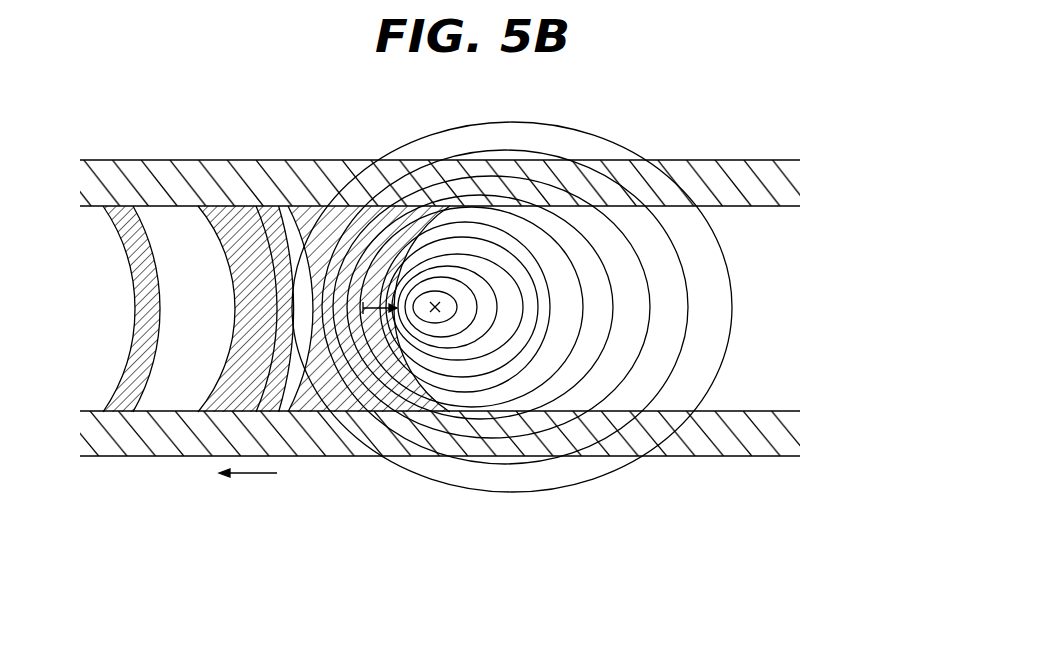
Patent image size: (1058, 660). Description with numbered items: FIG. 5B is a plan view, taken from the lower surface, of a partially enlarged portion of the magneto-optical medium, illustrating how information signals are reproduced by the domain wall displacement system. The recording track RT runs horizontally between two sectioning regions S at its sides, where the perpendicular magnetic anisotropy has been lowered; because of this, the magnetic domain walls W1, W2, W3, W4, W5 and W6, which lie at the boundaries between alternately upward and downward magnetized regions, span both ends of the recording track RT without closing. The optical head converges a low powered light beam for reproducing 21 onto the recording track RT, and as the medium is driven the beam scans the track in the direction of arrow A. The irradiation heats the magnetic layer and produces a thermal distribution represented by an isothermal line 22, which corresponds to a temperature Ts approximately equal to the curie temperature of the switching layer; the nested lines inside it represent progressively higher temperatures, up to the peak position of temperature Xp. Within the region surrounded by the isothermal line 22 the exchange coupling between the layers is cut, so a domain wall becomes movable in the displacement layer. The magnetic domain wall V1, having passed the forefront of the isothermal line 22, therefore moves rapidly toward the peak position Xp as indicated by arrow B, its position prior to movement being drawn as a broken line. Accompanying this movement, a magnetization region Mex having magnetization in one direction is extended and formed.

The sectioning region S is at (798, 181).
The recording track RT is at (798, 302).
The magnetic domain wall W1 is at (340, 190).
The magnetic domain wall W2 is at (290, 227).
The magnetic domain wall W3 is at (263, 217).
The magnetic domain wall W4 is at (203, 207).
The magnetic domain wall W5 is at (138, 237).
The magnetic domain wall W6 is at (110, 203).
The magnetization region Mex is at (402, 200).
The magnetic domain wall V1 is at (477, 218).
The peak position of temperature Xp is at (438, 315).
The arrow B is at (380, 297).
The light beam for reproducing 21 is at (328, 413).
The isothermal line 22 is at (617, 472).
The arrow A is at (248, 485).